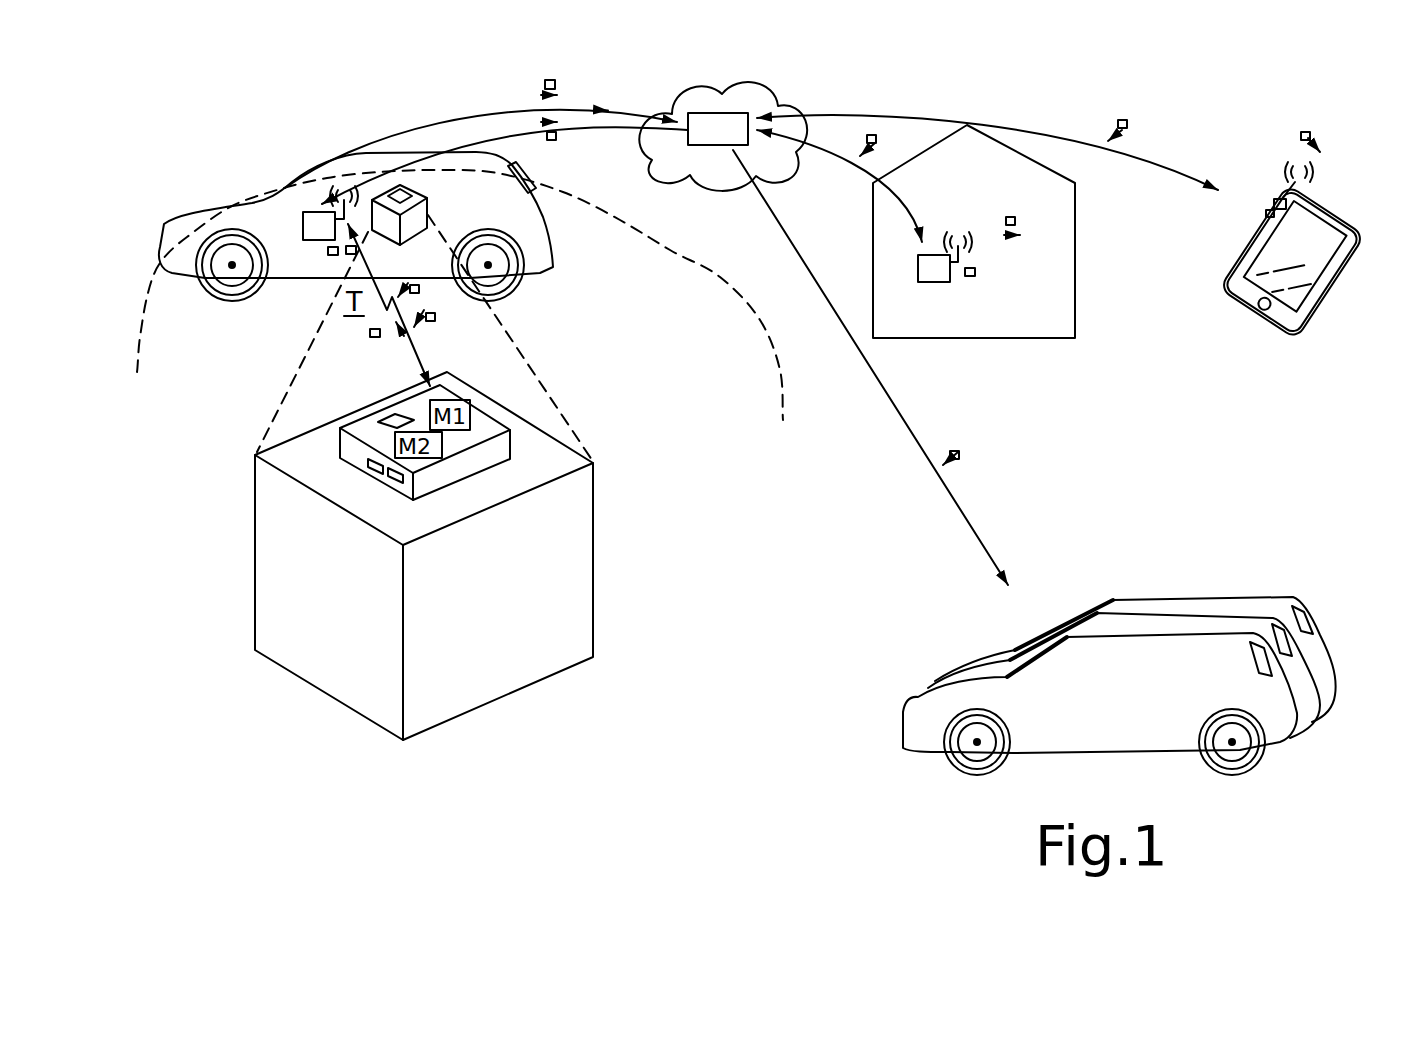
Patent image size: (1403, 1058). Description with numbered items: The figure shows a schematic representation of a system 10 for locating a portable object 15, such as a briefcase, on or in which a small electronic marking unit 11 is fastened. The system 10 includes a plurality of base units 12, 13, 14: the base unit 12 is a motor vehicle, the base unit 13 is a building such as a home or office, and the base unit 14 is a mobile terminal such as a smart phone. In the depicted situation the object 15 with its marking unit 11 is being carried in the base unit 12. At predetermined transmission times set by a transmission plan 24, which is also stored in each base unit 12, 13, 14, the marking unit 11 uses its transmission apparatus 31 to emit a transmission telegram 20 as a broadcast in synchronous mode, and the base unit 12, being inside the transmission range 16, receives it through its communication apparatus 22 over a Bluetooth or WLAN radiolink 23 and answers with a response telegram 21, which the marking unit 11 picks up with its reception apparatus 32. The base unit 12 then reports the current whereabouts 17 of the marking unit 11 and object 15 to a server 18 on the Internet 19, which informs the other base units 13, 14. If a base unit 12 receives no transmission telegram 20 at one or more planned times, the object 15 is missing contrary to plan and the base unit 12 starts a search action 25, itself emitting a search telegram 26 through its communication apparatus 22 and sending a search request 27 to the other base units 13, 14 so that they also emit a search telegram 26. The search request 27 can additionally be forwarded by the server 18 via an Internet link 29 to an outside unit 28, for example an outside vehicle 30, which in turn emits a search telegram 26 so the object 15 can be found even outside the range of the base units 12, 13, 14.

The system 10 is at (758, 548).
The marking unit 11 is at (542, 386).
The base unit 12 is at (553, 268).
The base unit 13 is at (975, 339).
The base unit 14 is at (1252, 322).
The object 15 is at (593, 500).
The transmission range 16 is at (780, 372).
The current whereabouts 17 is at (556, 84).
The server 18 is at (720, 146).
The Internet 19 is at (655, 172).
The transmission telegram 20 is at (370, 334).
The response telegram 21 is at (435, 318).
The communication apparatus 22 is at (303, 220).
The radiolink 23 is at (412, 350).
The transmission plan 24 is at (328, 253).
The search action 25 is at (357, 250).
The search telegram 26 is at (419, 291).
The search request 27 is at (961, 453).
The outside unit 28 is at (1096, 570).
The Internet link 29 is at (907, 433).
The outside vehicle 30 is at (1217, 607).
The transmission apparatus 31 is at (372, 470).
The reception apparatus 32 is at (396, 484).